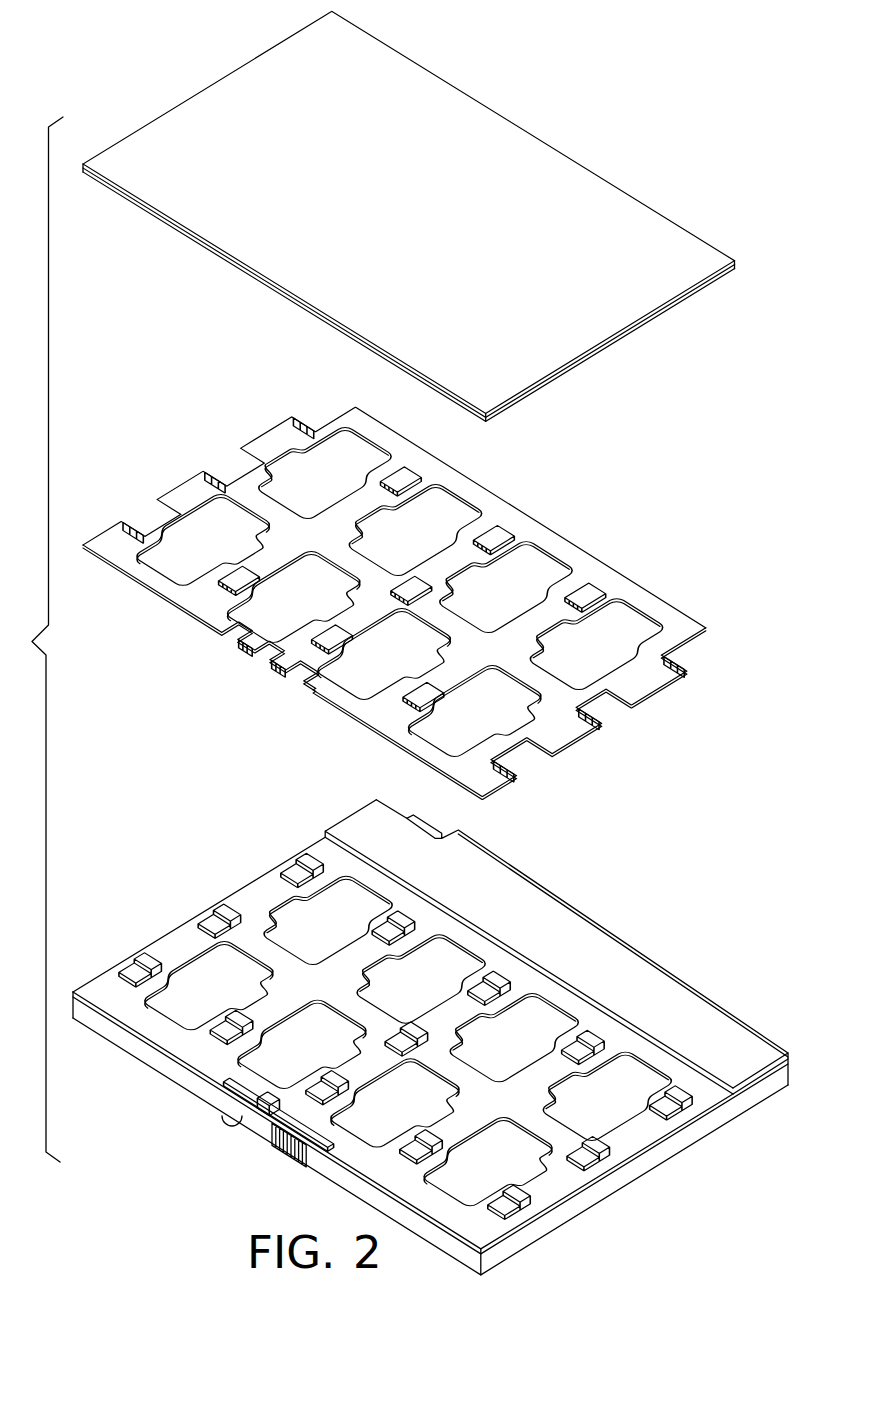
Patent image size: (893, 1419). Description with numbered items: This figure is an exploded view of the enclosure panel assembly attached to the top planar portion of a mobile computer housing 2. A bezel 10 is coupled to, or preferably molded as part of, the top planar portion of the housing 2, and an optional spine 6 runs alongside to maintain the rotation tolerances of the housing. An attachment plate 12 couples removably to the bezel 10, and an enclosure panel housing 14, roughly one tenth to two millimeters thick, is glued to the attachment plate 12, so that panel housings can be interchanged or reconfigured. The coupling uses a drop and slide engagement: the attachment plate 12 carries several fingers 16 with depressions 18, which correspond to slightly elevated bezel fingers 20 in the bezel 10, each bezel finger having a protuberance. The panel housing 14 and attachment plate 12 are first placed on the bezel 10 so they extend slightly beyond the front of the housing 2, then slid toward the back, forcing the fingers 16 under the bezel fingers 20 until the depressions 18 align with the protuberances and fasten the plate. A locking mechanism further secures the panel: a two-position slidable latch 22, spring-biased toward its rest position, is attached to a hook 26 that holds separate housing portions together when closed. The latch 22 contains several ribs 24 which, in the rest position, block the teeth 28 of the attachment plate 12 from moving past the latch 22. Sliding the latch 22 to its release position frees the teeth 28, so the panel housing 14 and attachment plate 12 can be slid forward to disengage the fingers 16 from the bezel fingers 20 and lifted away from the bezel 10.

The mobile computer housing 2 is at (677, 1160).
The spine 6 is at (700, 1000).
The bezel 10 is at (258, 905).
The attachment plate 12 is at (598, 558).
The enclosure panel housing 14 is at (565, 157).
The fingers 16 is at (135, 522).
The depressions 18 is at (223, 460).
The bezel fingers 20 is at (140, 977).
The latch 22 is at (277, 1143).
The ribs 24 is at (250, 1128).
The hook 26 is at (225, 1125).
The teeth 28 is at (248, 656).